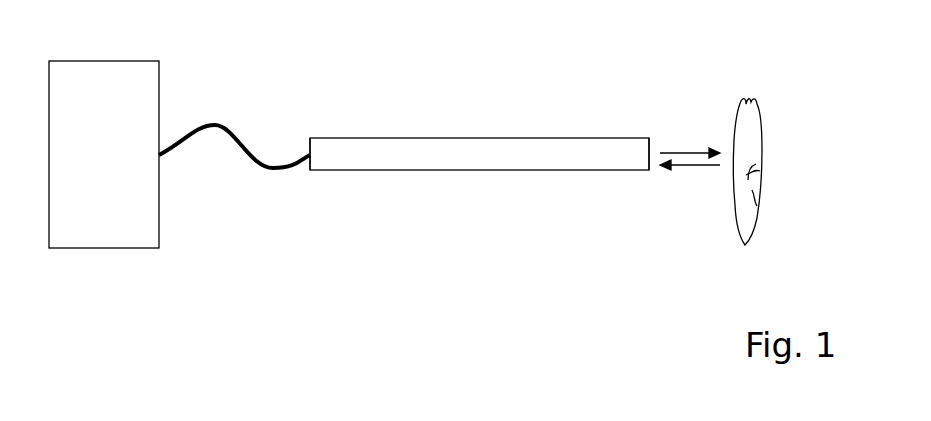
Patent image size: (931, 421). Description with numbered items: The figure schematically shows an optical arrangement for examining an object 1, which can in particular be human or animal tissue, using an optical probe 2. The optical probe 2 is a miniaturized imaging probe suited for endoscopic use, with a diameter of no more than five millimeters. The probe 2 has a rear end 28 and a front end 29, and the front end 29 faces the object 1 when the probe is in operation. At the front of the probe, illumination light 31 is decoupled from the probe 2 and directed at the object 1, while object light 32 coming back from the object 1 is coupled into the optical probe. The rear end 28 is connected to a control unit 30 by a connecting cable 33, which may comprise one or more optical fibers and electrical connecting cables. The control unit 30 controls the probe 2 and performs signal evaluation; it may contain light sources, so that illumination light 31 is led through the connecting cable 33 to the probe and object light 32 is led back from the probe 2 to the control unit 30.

The object 1 is at (760, 147).
The optical probe 2 is at (395, 137).
The rear end 28 is at (310, 137).
The front end 29 is at (655, 137).
The control unit 30 is at (110, 77).
The illumination light 31 is at (677, 152).
The object light 32 is at (690, 170).
The connecting cable 33 is at (197, 136).